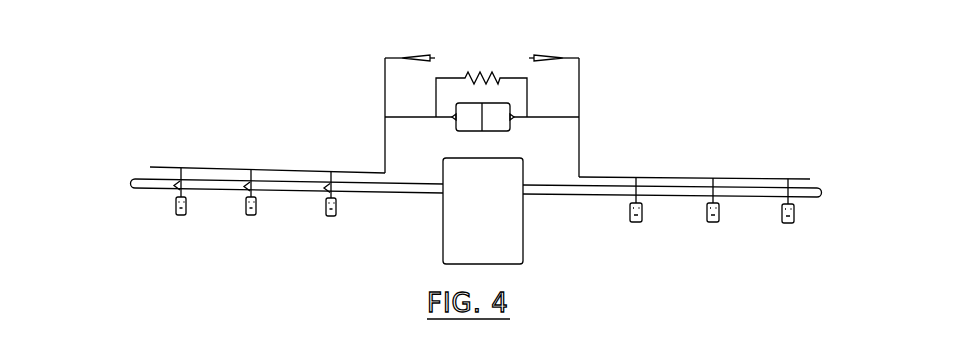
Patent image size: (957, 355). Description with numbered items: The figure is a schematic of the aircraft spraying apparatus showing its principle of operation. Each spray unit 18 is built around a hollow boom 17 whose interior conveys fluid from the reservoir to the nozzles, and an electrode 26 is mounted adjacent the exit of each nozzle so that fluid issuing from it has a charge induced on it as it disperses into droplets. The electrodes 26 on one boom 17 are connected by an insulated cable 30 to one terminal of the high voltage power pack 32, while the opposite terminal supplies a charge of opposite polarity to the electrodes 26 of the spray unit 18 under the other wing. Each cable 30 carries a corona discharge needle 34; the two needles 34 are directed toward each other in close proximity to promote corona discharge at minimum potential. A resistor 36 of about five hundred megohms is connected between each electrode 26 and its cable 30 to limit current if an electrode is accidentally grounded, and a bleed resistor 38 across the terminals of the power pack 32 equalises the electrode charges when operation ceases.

The hollow boom 17 is at (414, 193).
The spray unit 18 is at (218, 212).
The electrode 26 is at (338, 211).
The insulated cable 30 is at (384, 140).
The high voltage power pack 32 is at (466, 119).
The corona discharge needle 34 is at (418, 54).
The resistor 36 is at (325, 193).
The bleed resistor 38 is at (480, 72).